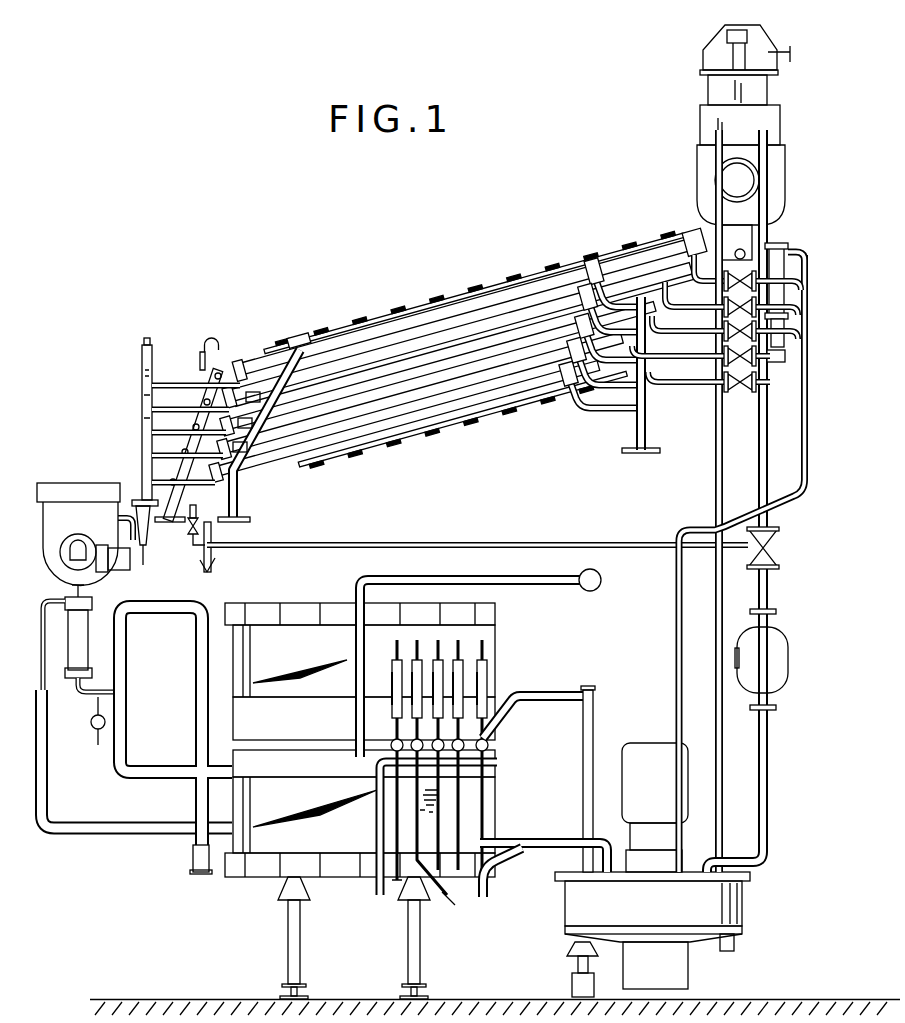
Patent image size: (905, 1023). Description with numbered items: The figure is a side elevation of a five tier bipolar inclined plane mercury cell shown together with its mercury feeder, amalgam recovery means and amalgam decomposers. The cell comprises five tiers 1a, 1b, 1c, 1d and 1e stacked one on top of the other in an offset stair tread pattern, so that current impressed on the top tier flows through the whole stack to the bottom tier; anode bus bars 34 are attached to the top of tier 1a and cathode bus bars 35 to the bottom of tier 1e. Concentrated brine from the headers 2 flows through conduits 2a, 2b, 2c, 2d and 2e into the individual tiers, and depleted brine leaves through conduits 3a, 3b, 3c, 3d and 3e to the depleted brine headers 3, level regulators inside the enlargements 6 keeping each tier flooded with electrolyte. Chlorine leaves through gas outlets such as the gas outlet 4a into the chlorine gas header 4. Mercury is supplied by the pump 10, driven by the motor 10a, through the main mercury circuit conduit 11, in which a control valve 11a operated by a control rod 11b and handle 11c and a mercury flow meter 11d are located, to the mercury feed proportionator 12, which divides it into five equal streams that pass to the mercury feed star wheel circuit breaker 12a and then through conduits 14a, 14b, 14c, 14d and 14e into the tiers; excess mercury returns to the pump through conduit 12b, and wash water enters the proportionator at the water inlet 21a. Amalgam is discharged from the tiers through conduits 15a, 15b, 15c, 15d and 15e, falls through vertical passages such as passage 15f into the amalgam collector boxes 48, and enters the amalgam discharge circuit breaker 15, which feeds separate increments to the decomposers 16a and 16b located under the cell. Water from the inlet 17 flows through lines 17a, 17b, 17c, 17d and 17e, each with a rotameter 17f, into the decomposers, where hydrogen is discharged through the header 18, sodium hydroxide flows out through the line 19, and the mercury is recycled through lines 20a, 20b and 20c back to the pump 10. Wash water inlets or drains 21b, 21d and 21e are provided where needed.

The tier 1a is at (333, 348).
The tier 1b is at (437, 337).
The tier 1c is at (457, 358).
The tier 1d is at (485, 368).
The tier 1e is at (410, 408).
The header 2 is at (240, 512).
The conduit 2a is at (295, 338).
The conduit 2b is at (270, 385).
The conduit 2c is at (262, 394).
The conduit 2d is at (252, 428).
The conduit 2e is at (242, 452).
The depleted brine header 3 is at (642, 440).
The conduit 3a is at (600, 290).
The conduit 3b is at (600, 330).
The conduit 3c is at (592, 355).
The conduit 3d is at (585, 380).
The conduit 3e is at (575, 400).
The chlorine gas header 4 is at (752, 240).
The gas outlet 4a is at (696, 232).
The enlargement 6 is at (593, 272).
The pump 10 is at (735, 895).
The motor 10a is at (670, 794).
The main mercury circuit conduit 11 is at (770, 144).
The control valve 11a is at (778, 535).
The control rod 11b is at (408, 543).
The handle 11c is at (212, 565).
The mercury flow meter 11d is at (775, 675).
The mercury feed proportionator 12 is at (780, 122).
The mercury feed star wheel circuit breaker 12a is at (786, 180).
The conduit 12b is at (714, 476).
The conduit 14a is at (690, 250).
The conduit 14b is at (672, 298).
The conduit 14c is at (662, 327).
The conduit 14d is at (672, 375).
The conduit 14e is at (660, 384).
The amalgam discharge circuit breaker 15 is at (42, 528).
The conduit 15a is at (158, 383).
The conduit 15b is at (152, 408).
The conduit 15c is at (152, 430).
The conduit 15d is at (152, 454).
The conduit 15e is at (152, 481).
The vertical passage 15f is at (142, 360).
The decomposer 16a is at (315, 655).
The decomposer 16b is at (322, 841).
The inlet 17 is at (378, 818).
The line 17a is at (433, 640).
The line 17b is at (463, 648).
The line 17c is at (408, 808).
The line 17d is at (399, 880).
The line 17e is at (486, 782).
The rotameter 17f is at (412, 675).
The header 18 is at (355, 590).
The line 19 is at (192, 855).
The line 20a is at (523, 870).
The line 20b is at (518, 838).
The line 20c is at (535, 695).
The water inlet 21a is at (788, 52).
The wash water inlet or drain 21b is at (195, 506).
The wash water inlet or drain 21d is at (735, 945).
The wash water inlet or drain 21e is at (148, 540).
The anode bus bars 34 is at (405, 310).
The cathode bus bars 35 is at (360, 455).
The amalgam collector boxes 48 is at (130, 565).